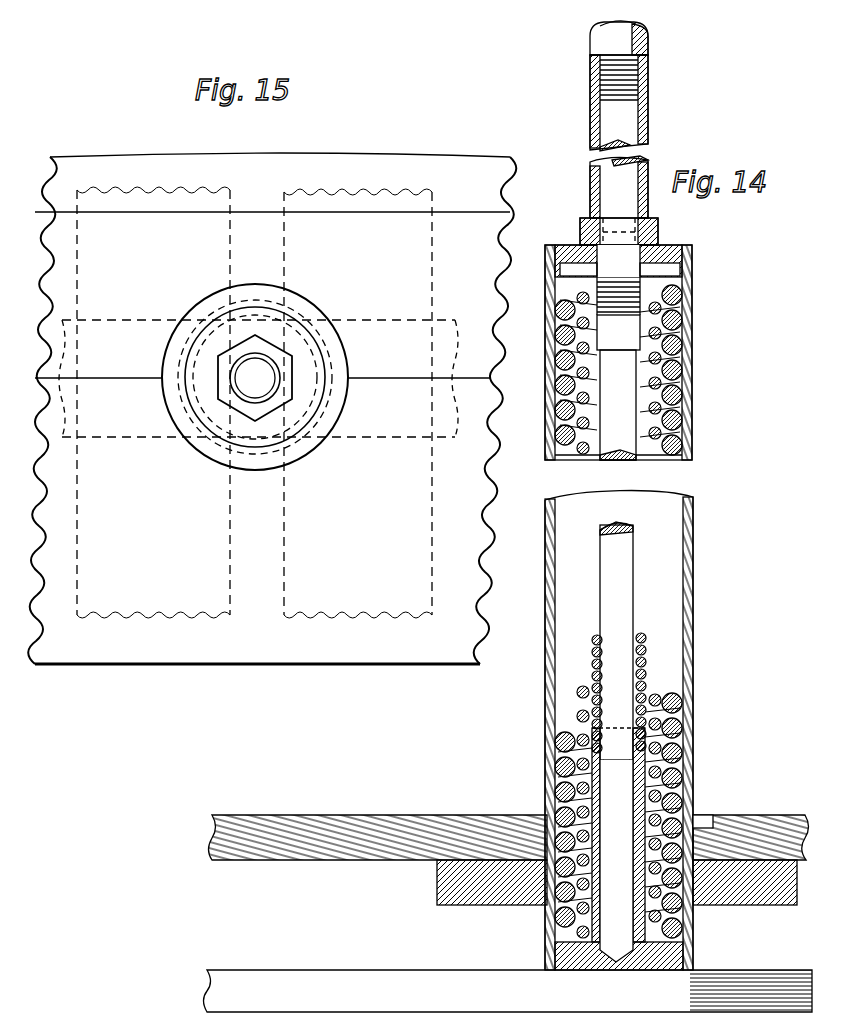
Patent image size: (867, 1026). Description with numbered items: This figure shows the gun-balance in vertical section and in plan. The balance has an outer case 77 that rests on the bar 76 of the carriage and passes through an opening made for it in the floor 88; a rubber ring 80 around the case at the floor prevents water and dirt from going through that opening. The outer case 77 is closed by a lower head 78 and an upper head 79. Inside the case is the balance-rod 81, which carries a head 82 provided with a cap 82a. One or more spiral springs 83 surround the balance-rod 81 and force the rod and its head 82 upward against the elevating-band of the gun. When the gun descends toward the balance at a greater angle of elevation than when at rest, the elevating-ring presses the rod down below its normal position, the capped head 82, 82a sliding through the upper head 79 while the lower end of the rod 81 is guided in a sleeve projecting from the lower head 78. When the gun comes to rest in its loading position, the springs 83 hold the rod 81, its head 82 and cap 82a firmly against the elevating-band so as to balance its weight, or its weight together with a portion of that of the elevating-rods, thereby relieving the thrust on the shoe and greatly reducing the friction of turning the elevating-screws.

In FIG. 14, the cap 82a is at (640, 52).
In FIG. 15, the cap 82a is at (255, 378).
In FIG. 14, the head 82 is at (648, 130).
In FIG. 14, the upper head 79 is at (656, 238).
In FIG. 15, the upper head 79 is at (255, 377).
In FIG. 14, the outer case 77 is at (693, 606).
In FIG. 14, the balance-rod 81 is at (634, 576).
In FIG. 14, the spiral springs 83 is at (643, 640).
In FIG. 14, the floor 88 is at (445, 812).
In FIG. 14, the rubber ring 80 is at (707, 818).
In FIG. 15, the rubber ring 80 is at (268, 377).
In FIG. 14, the bar 76 is at (470, 975).
In FIG. 14, the lower head 78 is at (670, 966).